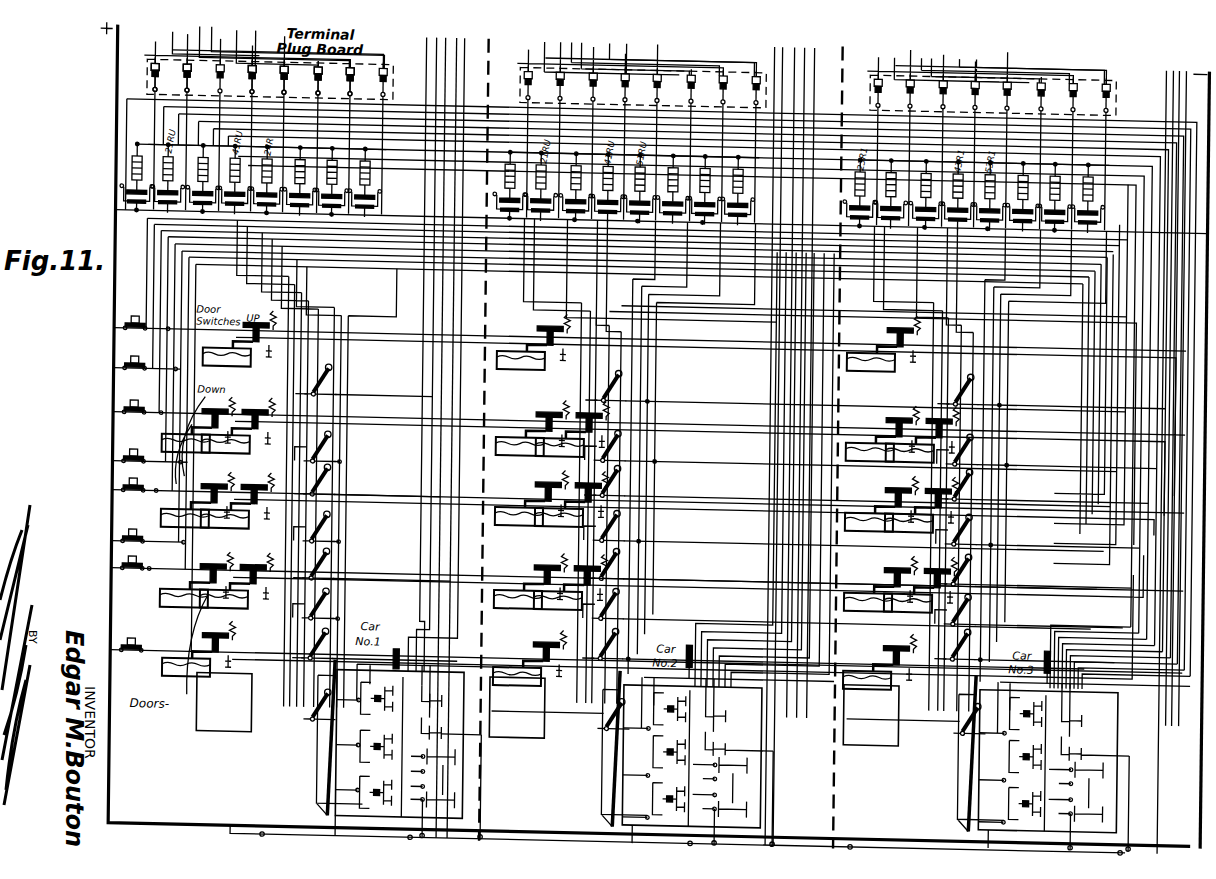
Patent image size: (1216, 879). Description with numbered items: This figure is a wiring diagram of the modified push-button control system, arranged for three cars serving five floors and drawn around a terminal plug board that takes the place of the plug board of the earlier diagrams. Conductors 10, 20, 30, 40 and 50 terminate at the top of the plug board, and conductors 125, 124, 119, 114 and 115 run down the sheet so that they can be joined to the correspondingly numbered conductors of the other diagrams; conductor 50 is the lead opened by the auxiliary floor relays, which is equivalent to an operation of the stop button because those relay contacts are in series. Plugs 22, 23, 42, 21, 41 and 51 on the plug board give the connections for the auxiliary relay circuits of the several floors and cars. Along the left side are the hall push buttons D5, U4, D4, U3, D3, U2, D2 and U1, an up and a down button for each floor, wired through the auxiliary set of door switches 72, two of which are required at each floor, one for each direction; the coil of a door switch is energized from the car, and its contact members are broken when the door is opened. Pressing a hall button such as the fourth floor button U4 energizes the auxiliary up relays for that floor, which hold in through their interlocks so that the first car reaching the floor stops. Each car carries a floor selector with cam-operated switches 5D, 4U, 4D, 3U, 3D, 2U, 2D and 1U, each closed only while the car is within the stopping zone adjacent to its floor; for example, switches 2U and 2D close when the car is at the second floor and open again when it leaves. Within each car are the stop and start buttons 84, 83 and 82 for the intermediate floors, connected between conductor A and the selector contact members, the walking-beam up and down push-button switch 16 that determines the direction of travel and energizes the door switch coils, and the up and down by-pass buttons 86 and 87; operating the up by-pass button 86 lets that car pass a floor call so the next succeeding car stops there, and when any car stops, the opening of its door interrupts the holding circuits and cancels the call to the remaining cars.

The terminal lead 10 is at (204, 42).
The terminal lead 20 is at (262, 46).
The terminal lead 30 is at (279, 47).
The terminal lead 40 is at (265, 48).
The conductor 50 is at (263, 48).
The conductor 125 is at (407, 354).
The conductor 124 is at (412, 354).
The conductor 119 is at (446, 52).
The conductor 114 is at (452, 74).
The conductor 115 is at (452, 98).
The plug 22 is at (164, 75).
The plug 23 is at (197, 76).
The plug 42 is at (261, 77).
The plug 21 is at (293, 80).
The plug 41 is at (327, 81).
The plug 51 is at (359, 82).
The door switch 72 is at (216, 652).
The stop and start button 84 is at (394, 702).
The stop and start button 83 is at (393, 751).
The stop and start button 82 is at (393, 794).
The up by-pass button 86 is at (447, 693).
The down by-pass button 87 is at (447, 728).
The push-button station 16 is at (432, 778).
The down push button D5 is at (145, 313).
The up push button U4 is at (150, 354).
The down push button D4 is at (142, 398).
The up push button U3 is at (152, 447).
The down push button D3 is at (138, 477).
The up push button U2 is at (153, 524).
The down push button D2 is at (131, 556).
The up push button U1 is at (131, 631).
The cam-operated selector switch 5D is at (320, 380).
The cam-operated selector switch 4U is at (320, 447).
The cam-operated selector switch 4D is at (319, 480).
The cam-operated selector switch 3U is at (319, 527).
The cam-operated selector switch 3D is at (318, 564).
The cam-operated selector switch 2U is at (318, 604).
The cam-operated selector switch 2D is at (317, 644).
The cam-operated selector switch 1U is at (310, 709).